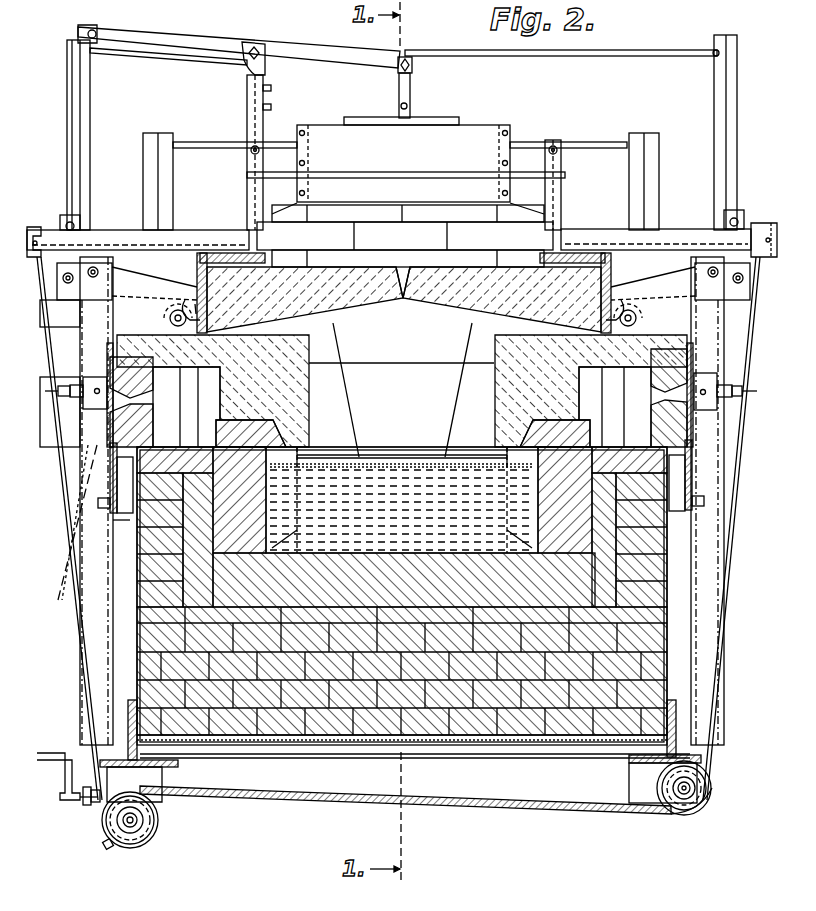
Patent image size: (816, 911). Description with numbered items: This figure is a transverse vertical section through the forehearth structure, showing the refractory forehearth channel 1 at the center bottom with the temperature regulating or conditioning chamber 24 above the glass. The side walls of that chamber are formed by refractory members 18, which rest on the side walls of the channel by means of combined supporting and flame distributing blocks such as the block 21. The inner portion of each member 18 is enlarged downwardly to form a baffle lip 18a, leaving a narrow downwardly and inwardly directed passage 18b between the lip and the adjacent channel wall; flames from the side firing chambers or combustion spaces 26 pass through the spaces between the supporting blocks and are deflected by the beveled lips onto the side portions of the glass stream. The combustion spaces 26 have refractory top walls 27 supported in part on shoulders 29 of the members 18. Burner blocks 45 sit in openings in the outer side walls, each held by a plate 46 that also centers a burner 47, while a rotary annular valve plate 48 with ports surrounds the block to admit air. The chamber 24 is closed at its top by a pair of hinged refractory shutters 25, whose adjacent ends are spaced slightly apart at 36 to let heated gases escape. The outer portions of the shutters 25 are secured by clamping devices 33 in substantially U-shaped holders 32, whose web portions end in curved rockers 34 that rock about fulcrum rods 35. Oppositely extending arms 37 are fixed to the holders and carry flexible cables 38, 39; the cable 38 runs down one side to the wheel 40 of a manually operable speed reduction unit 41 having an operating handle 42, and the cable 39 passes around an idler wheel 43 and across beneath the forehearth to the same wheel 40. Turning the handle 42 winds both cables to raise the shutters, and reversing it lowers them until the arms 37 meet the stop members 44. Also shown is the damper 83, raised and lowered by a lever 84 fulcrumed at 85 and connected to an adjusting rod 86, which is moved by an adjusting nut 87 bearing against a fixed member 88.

The forehearth channel 1 is at (384, 553).
The refractory members 18 is at (290, 400).
The baffle lips 18a is at (338, 443).
The passages 18b is at (274, 431).
The supporting and flame distributing block 21 is at (222, 431).
The temperature regulating or conditioning chamber 24 is at (478, 421).
The hinged refractory cover sections or shutters 25 is at (378, 316).
The side firing chambers or combustion spaces 26 is at (392, 401).
The refractory top walls 27 is at (175, 328).
The shoulders 29 is at (313, 345).
The U-shaped holders 32 is at (178, 310).
The clamping devices 33 is at (272, 248).
The rockers 34 is at (164, 305).
The fulcrum rods 35 is at (170, 298).
The space between shutter ends 36 is at (405, 282).
The arms 37 is at (108, 238).
The flexible cable 38 is at (68, 520).
The flexible cable 39 is at (735, 538).
The wheel 40 is at (138, 834).
The manually operable speed reduction unit 41 is at (140, 783).
The operating handle 42 is at (62, 776).
The idler pulley or wheel 43 is at (702, 800).
The stop members 44 is at (68, 226).
The burner blocks 45 is at (140, 408).
The plate 46 is at (113, 352).
The burner 47 is at (92, 403).
The rotary annular valve plate 48 is at (88, 440).
The damper 83 is at (439, 118).
The lever 84 is at (186, 42).
The fulcrum 85 is at (266, 64).
The adjusting rod 86 is at (88, 112).
The adjusting nut 87 is at (62, 547).
The fixed member 88 is at (75, 585).